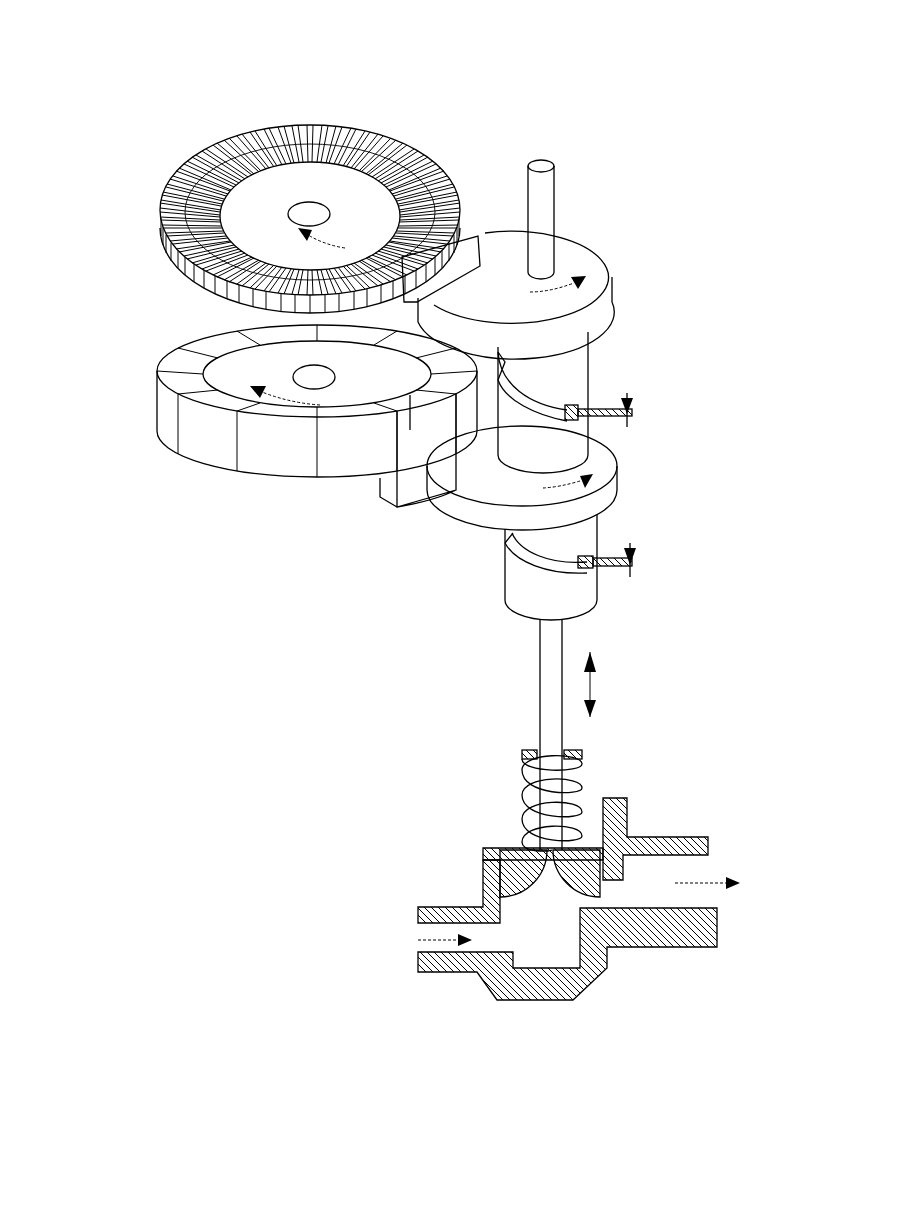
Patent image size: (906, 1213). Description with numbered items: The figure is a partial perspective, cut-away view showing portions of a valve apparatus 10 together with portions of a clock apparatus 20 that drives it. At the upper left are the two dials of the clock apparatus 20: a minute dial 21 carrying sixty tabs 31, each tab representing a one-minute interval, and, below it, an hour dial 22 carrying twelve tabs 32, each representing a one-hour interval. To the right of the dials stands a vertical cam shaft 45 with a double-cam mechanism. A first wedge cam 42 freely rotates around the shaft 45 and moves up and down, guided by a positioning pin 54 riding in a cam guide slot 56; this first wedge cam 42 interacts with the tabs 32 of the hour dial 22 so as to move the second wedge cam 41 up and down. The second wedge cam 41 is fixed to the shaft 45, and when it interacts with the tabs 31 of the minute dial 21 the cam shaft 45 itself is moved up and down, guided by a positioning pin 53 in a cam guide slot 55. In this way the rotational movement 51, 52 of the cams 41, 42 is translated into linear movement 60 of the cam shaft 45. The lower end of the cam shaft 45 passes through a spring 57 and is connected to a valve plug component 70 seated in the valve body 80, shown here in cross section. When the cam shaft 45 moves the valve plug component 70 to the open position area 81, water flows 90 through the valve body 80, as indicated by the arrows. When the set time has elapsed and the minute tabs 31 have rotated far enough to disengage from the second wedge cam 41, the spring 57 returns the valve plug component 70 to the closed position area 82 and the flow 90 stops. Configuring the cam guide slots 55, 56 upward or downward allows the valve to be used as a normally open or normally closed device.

The valve apparatus 10 is at (706, 102).
The clock apparatus 20 is at (146, 166).
The minute dial 21 is at (160, 220).
The tabs 31 is at (196, 280).
The hour dial 22 is at (162, 395).
The tabs 32 is at (388, 500).
The cam shaft 45 is at (541, 164).
The second wedge cam 41 is at (605, 232).
The rotational movement 51 is at (613, 300).
The cam guide slot 55 is at (540, 400).
The positioning pin 53 is at (632, 412).
The first wedge cam 42 is at (608, 445).
The rotational movement 52 is at (608, 482).
The cam guide slot 56 is at (505, 533).
The positioning pin 54 is at (633, 562).
The linear movement 60 is at (598, 680).
The spring 57 is at (520, 795).
The valve plug component 70 is at (483, 855).
The valve body 80 is at (418, 912).
The open position area 81 is at (635, 810).
The closed position area 82 is at (545, 1002).
The water flow 90 is at (418, 940).